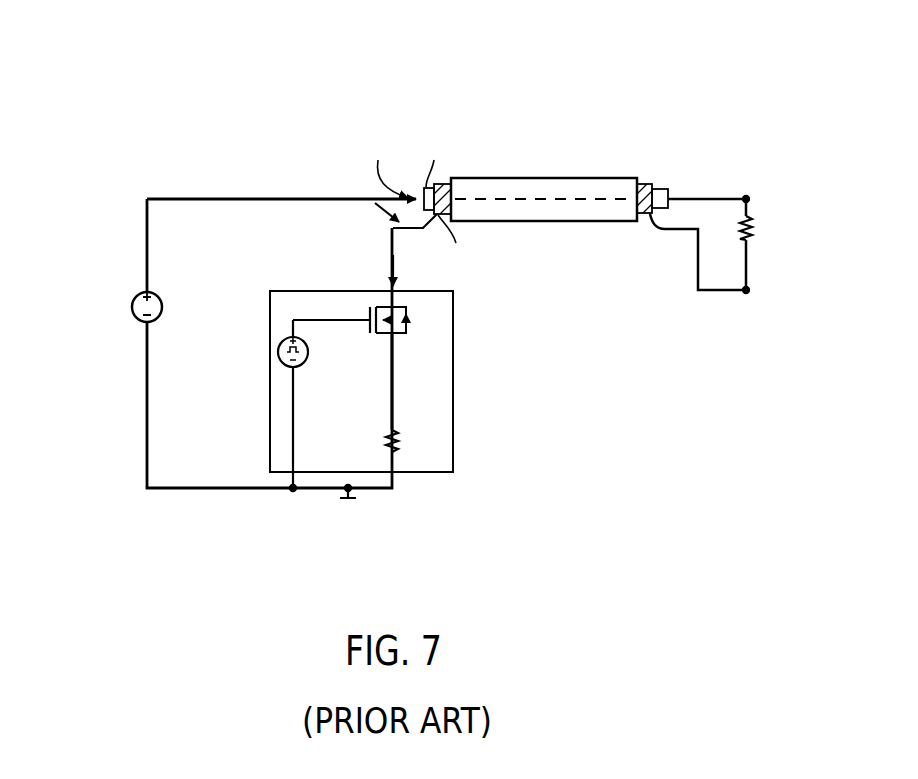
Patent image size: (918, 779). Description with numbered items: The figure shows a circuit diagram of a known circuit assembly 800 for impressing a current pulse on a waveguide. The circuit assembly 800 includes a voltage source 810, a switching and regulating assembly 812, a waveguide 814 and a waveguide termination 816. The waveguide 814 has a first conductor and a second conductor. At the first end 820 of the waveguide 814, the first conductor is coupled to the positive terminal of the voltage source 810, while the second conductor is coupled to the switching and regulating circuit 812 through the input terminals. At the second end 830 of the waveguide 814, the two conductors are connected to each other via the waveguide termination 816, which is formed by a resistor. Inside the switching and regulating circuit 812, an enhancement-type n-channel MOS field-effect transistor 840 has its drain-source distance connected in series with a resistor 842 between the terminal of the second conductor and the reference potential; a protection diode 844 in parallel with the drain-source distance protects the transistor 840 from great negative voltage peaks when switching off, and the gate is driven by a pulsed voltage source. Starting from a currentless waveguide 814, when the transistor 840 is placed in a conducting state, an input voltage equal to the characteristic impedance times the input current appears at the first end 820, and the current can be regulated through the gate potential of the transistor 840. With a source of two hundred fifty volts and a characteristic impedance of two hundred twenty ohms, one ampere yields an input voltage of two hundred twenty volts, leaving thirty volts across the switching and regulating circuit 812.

The circuit assembly 800 is at (442, 88).
The voltage source 810 is at (131, 307).
The switching and regulating assembly 812 is at (455, 405).
The waveguide 814 is at (562, 177).
The waveguide termination 816 is at (752, 229).
The first end 820 is at (353, 126).
The second end 830 is at (640, 128).
The n-channel MOS field-effect transistor 840 is at (395, 344).
The resistor 842 is at (406, 447).
The protection diode 844 is at (408, 324).